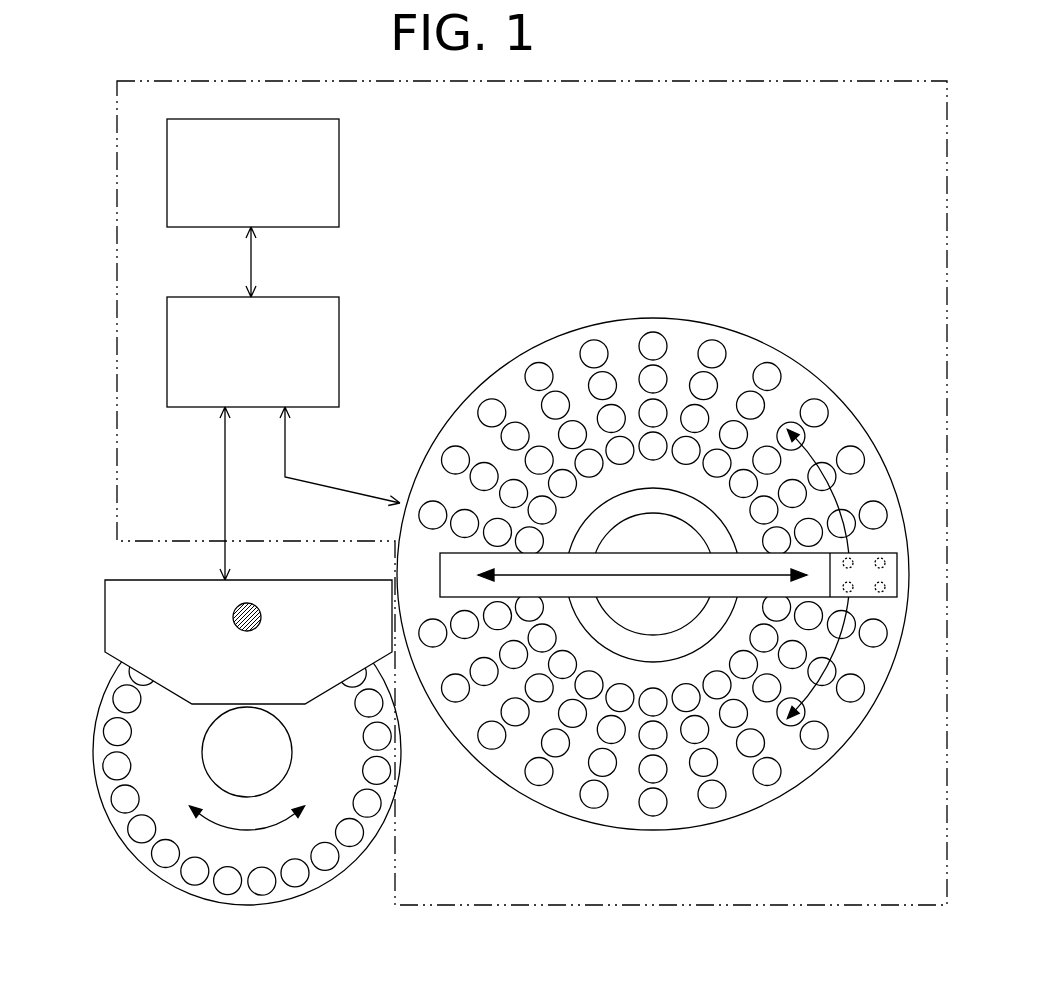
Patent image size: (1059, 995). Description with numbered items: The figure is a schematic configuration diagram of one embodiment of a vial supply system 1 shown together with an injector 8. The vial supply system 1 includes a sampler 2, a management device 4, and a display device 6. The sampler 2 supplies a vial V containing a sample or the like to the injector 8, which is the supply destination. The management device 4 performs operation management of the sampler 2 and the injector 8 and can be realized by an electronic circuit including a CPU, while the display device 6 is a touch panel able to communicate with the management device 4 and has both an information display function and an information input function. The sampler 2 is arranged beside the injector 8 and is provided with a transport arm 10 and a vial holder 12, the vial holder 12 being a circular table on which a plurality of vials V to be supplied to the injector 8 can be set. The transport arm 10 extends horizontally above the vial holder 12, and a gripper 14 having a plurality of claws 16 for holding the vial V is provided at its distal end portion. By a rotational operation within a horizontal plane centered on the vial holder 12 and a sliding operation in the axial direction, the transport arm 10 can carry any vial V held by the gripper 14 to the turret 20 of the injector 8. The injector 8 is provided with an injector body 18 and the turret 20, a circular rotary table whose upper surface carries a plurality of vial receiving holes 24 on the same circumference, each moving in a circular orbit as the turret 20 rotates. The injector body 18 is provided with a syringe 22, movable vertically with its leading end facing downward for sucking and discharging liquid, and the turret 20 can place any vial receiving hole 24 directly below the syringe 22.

The vial supply system 1 is at (720, 80).
The sampler 2 is at (653, 310).
The management device 4 is at (339, 297).
The display device 6 is at (339, 137).
The injector 8 is at (88, 697).
The transport arm 10 is at (675, 588).
The vial holder 12 is at (806, 362).
The gripper 14 is at (863, 568).
The claws 16 is at (882, 590).
The injector body 18 is at (118, 638).
The turret 20 is at (118, 835).
The syringe 22 is at (230, 613).
The vial receiving holes 24 is at (265, 886).
The vial V is at (720, 345).